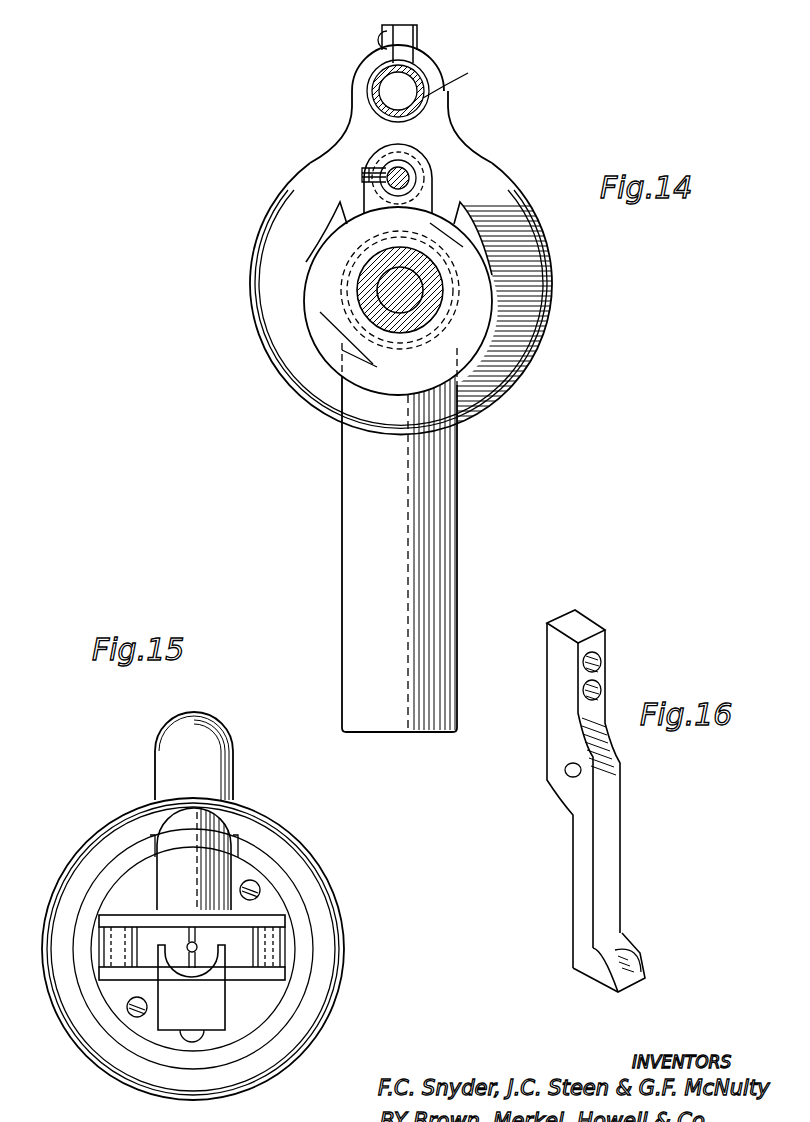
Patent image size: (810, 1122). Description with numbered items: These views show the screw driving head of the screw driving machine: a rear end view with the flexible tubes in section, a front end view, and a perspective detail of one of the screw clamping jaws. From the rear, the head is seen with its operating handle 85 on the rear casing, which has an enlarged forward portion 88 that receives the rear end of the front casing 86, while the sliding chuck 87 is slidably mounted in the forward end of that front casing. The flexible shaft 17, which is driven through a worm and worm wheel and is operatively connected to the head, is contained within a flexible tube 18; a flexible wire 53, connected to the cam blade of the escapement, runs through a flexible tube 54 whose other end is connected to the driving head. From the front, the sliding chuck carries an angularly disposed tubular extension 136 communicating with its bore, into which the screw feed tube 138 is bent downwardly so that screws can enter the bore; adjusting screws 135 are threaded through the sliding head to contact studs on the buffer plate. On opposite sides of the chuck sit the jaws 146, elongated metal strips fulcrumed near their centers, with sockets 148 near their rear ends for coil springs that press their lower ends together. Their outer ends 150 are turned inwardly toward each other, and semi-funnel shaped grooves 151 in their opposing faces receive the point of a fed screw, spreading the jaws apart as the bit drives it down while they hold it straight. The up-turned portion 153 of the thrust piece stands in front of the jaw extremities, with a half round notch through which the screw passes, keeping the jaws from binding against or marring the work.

In FIG. 14, the flexible shaft 17 is at (387, 297).
In FIG. 14, the flexible tube 18 is at (387, 252).
In FIG. 14, the flexible wire 53 is at (416, 183).
In FIG. 14, the flexible tube 54 is at (375, 178).
In FIG. 14, the operating handle 85 is at (446, 503).
In FIG. 15, the front casing 86 is at (300, 992).
In FIG. 15, the sliding chuck 87 is at (255, 1022).
In FIG. 15, the enlarged forward portion 88 is at (343, 940).
In FIG. 15, the adjusting screws 135 is at (258, 896).
In FIG. 15, the tubular extension 136 is at (196, 827).
In FIG. 15, the tube 138 is at (205, 757).
In FIG. 15, the jaws 146 is at (138, 937).
In FIG. 16, the jaws 146 is at (586, 838).
In FIG. 16, the sockets 148 is at (604, 692).
In FIG. 16, the inwardly turned outer ends 150 is at (600, 975).
In FIG. 16, the semi-funnel shaped grooves 151 is at (640, 968).
In FIG. 15, the up-turned portion 153 is at (215, 1015).